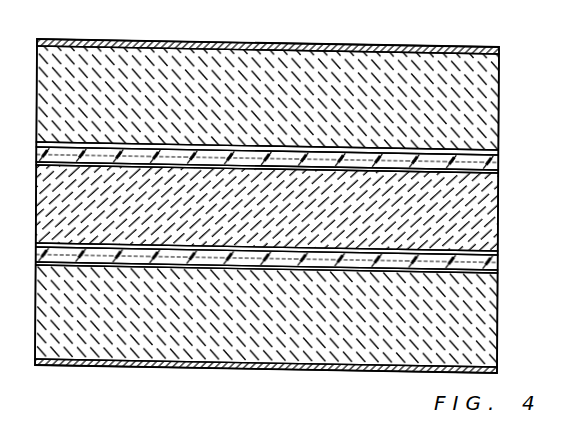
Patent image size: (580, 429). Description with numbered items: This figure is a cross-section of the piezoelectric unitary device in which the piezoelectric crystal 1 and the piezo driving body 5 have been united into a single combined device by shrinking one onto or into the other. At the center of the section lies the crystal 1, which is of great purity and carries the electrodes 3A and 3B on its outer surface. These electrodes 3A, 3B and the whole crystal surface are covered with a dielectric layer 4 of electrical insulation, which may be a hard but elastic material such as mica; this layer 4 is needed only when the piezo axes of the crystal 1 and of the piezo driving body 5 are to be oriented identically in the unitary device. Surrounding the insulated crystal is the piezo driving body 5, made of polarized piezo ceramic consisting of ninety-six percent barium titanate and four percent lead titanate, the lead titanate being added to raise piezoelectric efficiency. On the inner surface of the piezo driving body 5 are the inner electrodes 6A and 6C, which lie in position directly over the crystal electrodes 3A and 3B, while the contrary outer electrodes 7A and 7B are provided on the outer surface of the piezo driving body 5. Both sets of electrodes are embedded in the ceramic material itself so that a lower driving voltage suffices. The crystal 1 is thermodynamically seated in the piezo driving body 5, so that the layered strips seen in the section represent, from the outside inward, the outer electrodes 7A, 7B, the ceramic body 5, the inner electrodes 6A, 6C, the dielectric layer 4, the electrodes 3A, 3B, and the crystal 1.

The piezoelectric crystal 1 is at (70, 200).
The electrode 3A is at (498, 172).
The electrode 3B is at (498, 242).
The dielectric layer 4 is at (497, 161).
The piezo driving body 5 is at (412, 70).
The inner electrode 6A is at (484, 150).
The inner electrode 6C is at (486, 274).
The outer electrode 7A is at (275, 44).
The outer electrode 7B is at (238, 366).